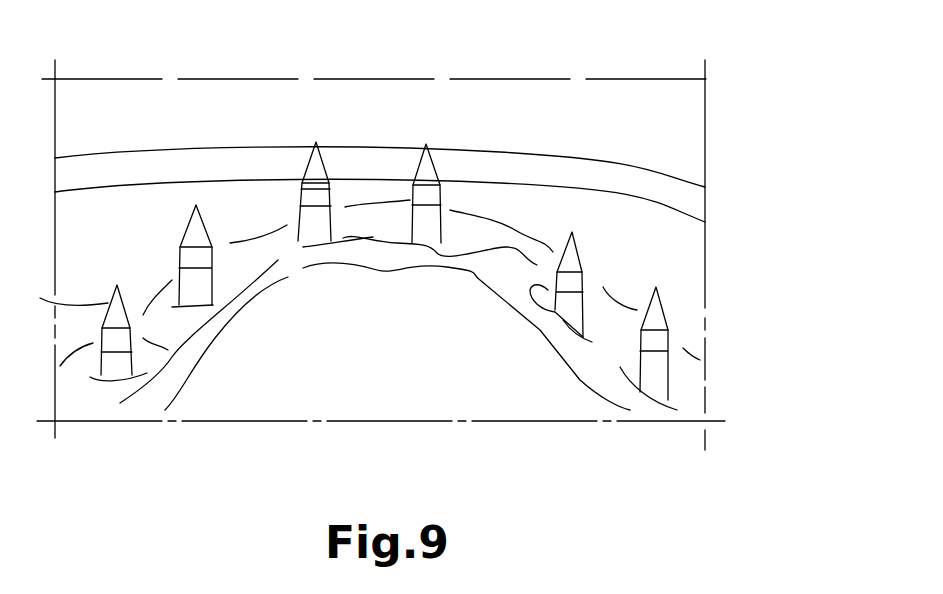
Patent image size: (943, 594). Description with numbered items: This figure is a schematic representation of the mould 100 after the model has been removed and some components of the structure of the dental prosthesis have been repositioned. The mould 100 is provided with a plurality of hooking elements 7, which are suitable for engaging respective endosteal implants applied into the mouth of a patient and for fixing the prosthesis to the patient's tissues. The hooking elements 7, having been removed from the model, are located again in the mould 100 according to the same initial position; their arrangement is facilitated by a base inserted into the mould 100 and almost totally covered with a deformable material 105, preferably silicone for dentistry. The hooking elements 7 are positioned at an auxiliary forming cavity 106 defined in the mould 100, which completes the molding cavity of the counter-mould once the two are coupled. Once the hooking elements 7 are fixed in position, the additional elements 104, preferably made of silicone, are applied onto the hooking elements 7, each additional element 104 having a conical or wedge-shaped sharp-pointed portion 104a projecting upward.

The mould 100 is at (675, 153).
The additional elements 104 is at (137, 320).
The sharp-pointed portion 104a is at (198, 215).
The auxiliary forming cavity 106 is at (383, 217).
The hooking element 7 is at (112, 377).
The deformable material 105 is at (208, 402).